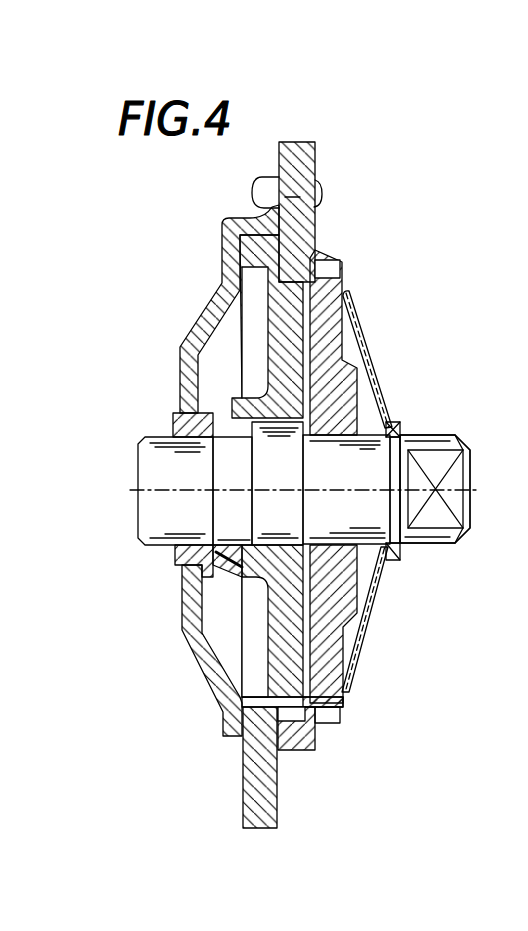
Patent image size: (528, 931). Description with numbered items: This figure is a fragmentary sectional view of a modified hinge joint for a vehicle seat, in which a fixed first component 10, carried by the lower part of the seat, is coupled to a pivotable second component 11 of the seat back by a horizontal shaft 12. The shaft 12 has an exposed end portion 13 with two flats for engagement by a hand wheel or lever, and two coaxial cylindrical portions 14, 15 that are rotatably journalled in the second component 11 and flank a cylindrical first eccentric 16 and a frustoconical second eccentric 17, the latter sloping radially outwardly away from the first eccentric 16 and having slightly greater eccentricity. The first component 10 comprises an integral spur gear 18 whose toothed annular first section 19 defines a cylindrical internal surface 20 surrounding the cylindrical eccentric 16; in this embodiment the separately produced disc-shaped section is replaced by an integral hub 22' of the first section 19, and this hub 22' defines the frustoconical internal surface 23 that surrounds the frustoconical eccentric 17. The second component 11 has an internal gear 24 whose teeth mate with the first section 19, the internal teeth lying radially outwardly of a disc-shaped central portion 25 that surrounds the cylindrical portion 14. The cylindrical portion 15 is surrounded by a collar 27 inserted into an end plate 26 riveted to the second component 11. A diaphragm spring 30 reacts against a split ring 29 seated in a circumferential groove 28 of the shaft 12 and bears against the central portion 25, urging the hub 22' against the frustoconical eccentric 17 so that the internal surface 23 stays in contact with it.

The first component 10 is at (258, 789).
The second component 11 is at (318, 168).
The shaft 12 is at (452, 420).
The exposed end portion 13 is at (447, 547).
The cylindrical portion 14 is at (351, 478).
The cylindrical portion 15 is at (193, 528).
The cylindrical first eccentric 16 is at (293, 528).
The frustoconical second eccentric 17 is at (248, 455).
The spur gear 18 is at (330, 692).
The toothed annular first section 19 is at (285, 328).
The cylindrical internal surface 20 is at (238, 556).
The integral hub 22' is at (184, 309).
The frustoconical internal surface 23 is at (151, 547).
The internal gear 24 is at (322, 721).
The central portion 25 is at (343, 603).
The end plate 26 is at (207, 672).
The collar 27 is at (188, 424).
The circumferential groove 28 is at (397, 518).
The split ring 29 is at (396, 425).
The diaphragm spring 30 is at (363, 347).